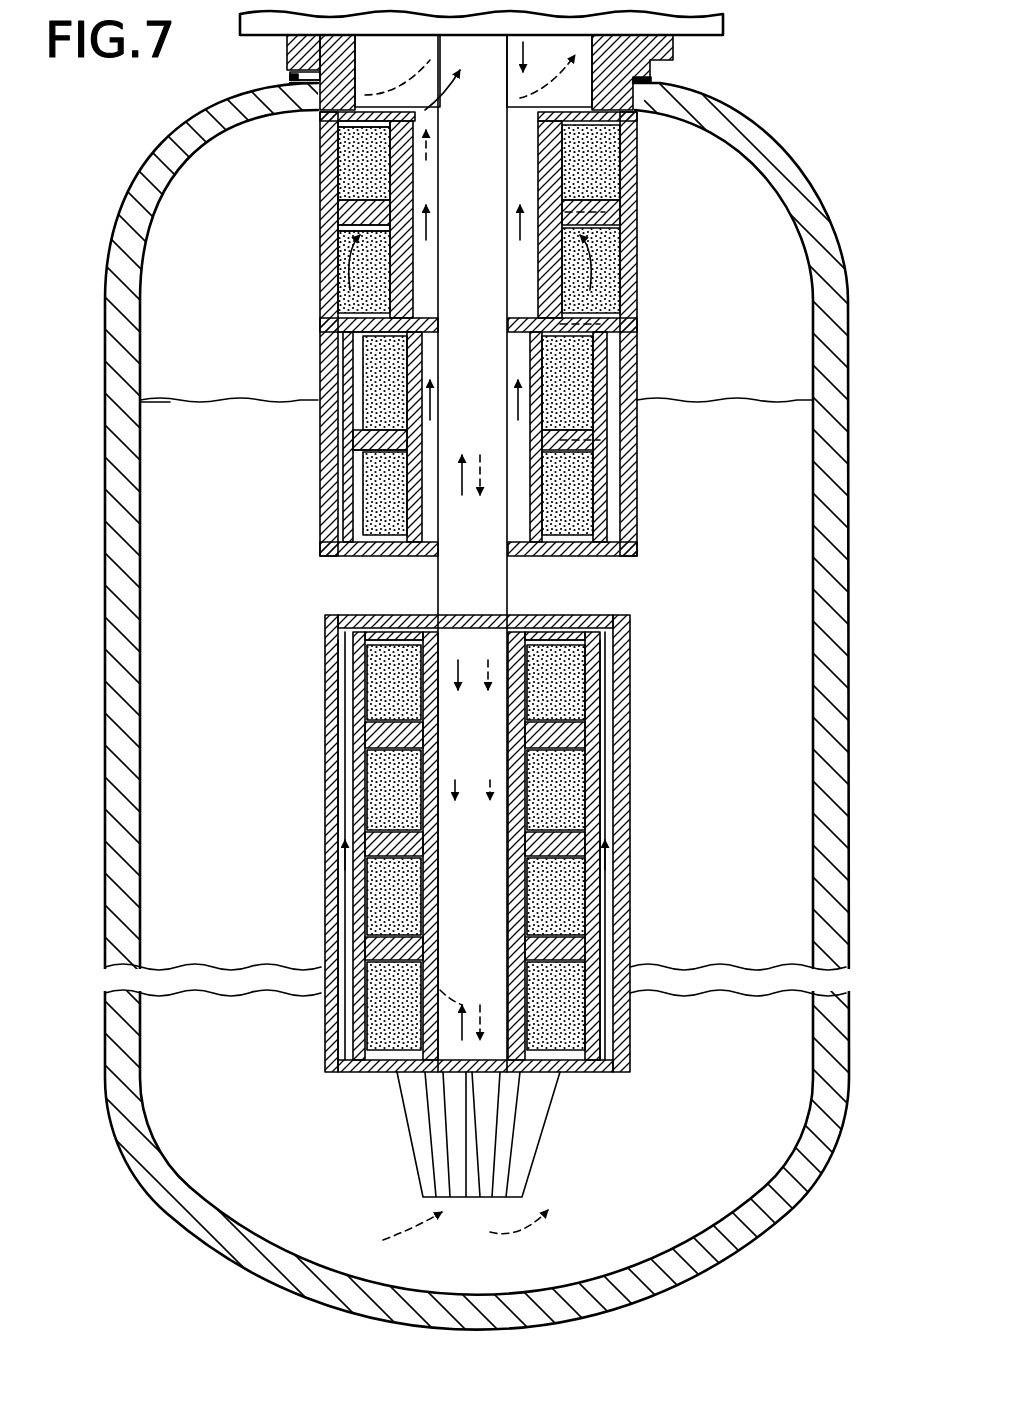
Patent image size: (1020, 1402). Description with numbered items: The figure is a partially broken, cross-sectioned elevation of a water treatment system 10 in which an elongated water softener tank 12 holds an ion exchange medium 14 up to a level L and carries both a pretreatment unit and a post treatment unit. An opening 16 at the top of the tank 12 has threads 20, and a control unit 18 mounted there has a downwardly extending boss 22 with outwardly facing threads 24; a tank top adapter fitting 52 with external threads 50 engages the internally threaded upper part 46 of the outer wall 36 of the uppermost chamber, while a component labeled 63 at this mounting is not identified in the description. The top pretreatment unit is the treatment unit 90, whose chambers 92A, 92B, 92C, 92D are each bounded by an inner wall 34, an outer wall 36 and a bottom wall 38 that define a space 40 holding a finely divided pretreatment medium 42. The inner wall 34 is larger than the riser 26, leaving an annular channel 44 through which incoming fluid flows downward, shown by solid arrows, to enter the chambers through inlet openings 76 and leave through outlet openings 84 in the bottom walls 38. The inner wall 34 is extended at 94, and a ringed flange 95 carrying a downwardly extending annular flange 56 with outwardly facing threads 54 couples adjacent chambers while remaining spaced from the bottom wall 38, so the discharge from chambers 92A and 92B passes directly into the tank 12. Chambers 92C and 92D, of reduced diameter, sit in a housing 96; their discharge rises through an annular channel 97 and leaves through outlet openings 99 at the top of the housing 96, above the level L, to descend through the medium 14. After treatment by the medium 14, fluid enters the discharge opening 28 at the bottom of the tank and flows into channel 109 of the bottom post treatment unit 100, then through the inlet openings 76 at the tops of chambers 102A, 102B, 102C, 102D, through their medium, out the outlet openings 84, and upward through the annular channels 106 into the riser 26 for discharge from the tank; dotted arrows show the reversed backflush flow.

The water treatment system 10 is at (488, 695).
The water softener tank 12 is at (848, 290).
The ion exchange medium 14 is at (758, 733).
The opening 16 is at (318, 124).
The control unit 18 is at (723, 26).
The threads 20 is at (366, 97).
The downwardly extending boss 22 is at (370, 68).
The outwardly facing threads 24 is at (673, 48).
The riser 26 is at (486, 578).
The discharge opening 28 is at (458, 1202).
The inner wall 34 is at (424, 190).
The outer wall 36 is at (637, 215).
The bottom wall 38 is at (332, 212).
The space 40 is at (495, 182).
The pretreatment water treatment medium 42 is at (600, 140).
The annular channel 44 is at (422, 150).
The upper part of outer wall 46 is at (320, 150).
The external threads 50 is at (418, 105).
The tank top adapter fitting 52 is at (682, 78).
The outwardly facing threads 54 is at (640, 252).
The downwardly extending annular flange 56 is at (637, 268).
The retaining cap 63 is at (288, 50).
The inlet openings 76 is at (422, 112).
The outlet openings 84 is at (480, 322).
The treatment unit 90 is at (481, 341).
The chamber 92A is at (637, 170).
The chamber 92B is at (637, 300).
The chamber 92C is at (343, 400).
The chamber 92D is at (345, 515).
The inner wall extension 94 is at (507, 300).
The ringed flange 95 is at (610, 203).
The housing 96 is at (340, 548).
The annular channel 97 is at (335, 500).
The outlet openings 99 is at (330, 332).
The treatment unit 100 is at (468, 843).
The chamber 102A is at (367, 650).
The chamber 102B is at (367, 800).
The chamber 102C is at (367, 895).
The chamber 102D is at (367, 1020).
The annular channel 106 is at (622, 1000).
The channel 109 is at (490, 826).
The level L is at (183, 398).